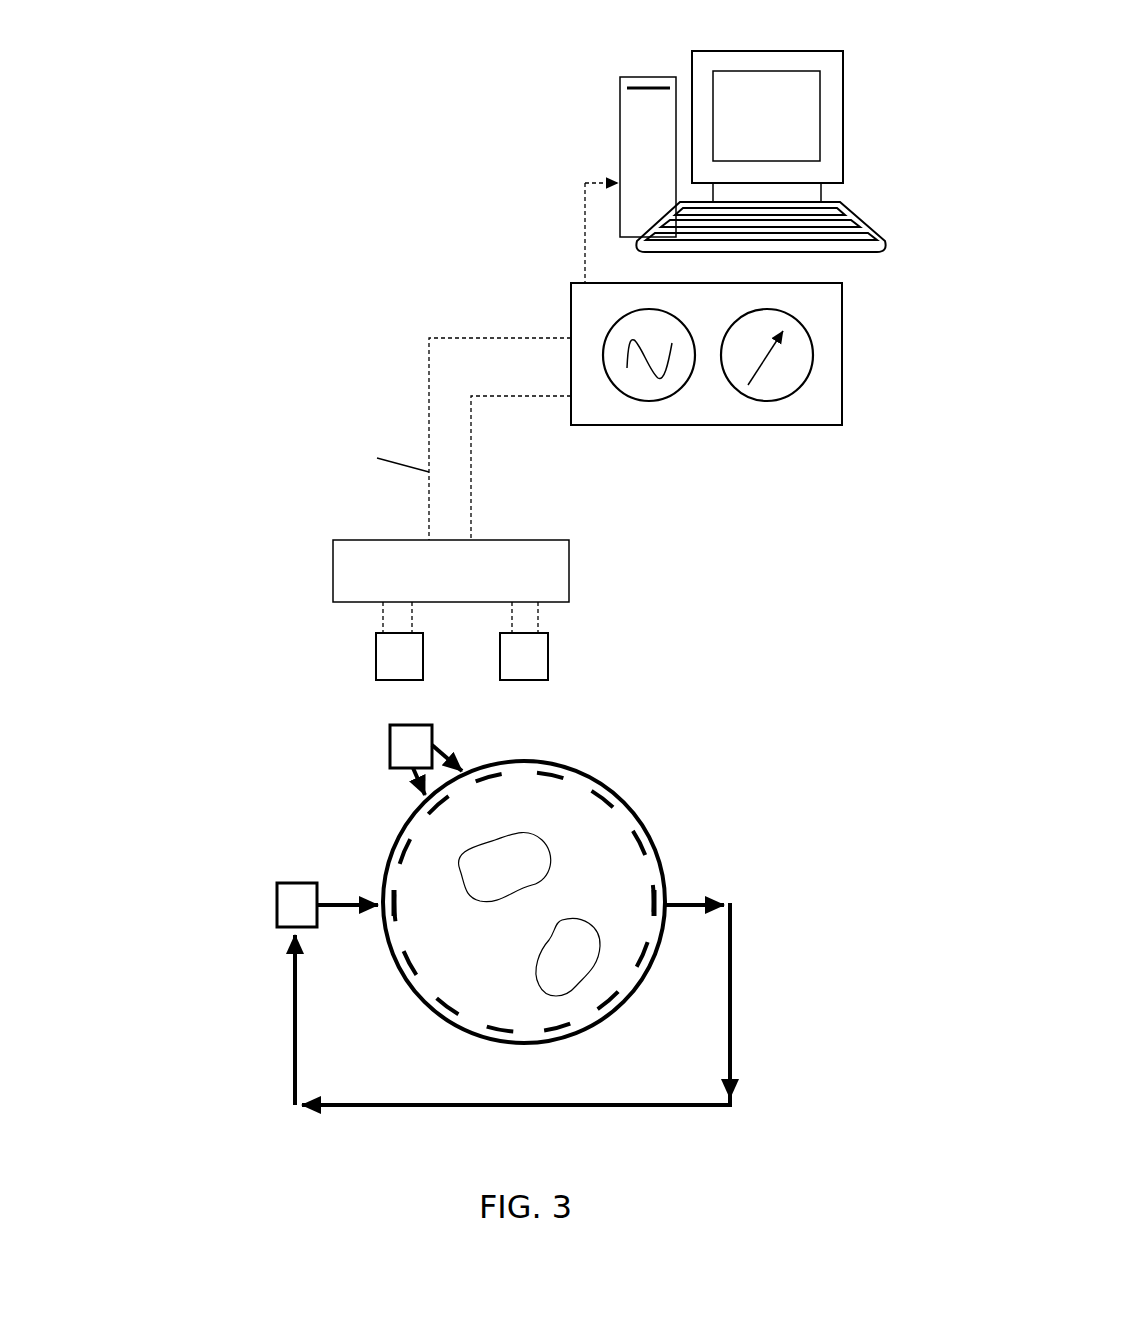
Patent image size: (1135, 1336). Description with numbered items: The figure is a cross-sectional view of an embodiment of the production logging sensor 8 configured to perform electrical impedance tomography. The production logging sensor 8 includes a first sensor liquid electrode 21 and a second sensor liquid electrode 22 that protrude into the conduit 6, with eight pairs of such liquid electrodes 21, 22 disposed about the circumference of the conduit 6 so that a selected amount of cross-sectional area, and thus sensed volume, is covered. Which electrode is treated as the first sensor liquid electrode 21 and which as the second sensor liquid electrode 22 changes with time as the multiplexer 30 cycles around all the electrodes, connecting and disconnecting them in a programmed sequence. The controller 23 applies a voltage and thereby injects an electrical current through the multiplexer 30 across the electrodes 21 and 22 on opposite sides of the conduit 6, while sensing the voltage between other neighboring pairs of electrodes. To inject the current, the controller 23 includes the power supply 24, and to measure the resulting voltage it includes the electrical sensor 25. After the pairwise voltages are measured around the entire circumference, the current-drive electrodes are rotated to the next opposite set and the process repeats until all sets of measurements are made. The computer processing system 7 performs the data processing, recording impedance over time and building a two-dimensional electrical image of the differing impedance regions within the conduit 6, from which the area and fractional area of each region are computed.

The production logging sensor 8 is at (260, 255).
The computer processing system 7 is at (620, 102).
The controller 23 is at (571, 298).
The power supply 24 is at (640, 403).
The electrical sensor 25 is at (787, 402).
The multiplexer 30 is at (451, 610).
The conduit 6 is at (563, 765).
The first sensor liquid electrode 21 is at (385, 897).
The second sensor liquid electrode 22 is at (662, 880).